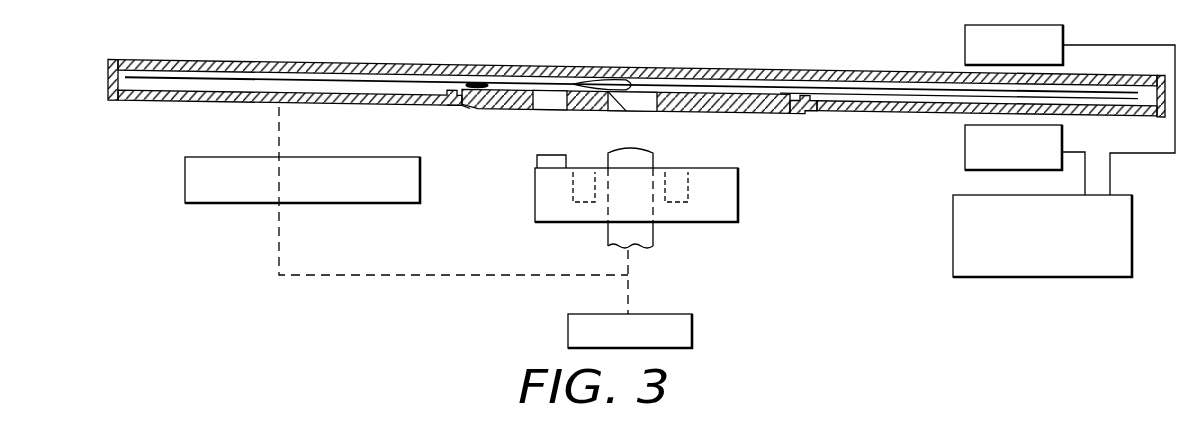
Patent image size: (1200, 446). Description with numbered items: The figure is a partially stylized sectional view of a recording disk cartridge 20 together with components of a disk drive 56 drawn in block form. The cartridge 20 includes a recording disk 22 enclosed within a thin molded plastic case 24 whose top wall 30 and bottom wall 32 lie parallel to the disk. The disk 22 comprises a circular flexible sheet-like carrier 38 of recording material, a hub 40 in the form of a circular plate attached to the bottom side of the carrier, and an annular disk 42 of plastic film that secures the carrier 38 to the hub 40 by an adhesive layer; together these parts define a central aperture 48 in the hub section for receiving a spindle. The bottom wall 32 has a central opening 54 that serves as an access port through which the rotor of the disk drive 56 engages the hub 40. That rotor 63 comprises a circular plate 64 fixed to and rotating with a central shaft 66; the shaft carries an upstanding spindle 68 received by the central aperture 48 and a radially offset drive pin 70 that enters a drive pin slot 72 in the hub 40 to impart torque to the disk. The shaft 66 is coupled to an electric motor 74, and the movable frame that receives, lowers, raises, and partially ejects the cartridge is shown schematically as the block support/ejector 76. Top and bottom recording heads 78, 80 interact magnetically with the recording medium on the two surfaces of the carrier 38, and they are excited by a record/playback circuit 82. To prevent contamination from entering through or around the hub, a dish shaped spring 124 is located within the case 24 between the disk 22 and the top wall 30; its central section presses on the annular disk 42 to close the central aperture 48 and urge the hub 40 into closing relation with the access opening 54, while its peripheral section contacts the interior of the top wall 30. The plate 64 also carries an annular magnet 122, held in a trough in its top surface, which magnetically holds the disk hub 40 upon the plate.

The cartridge 20 is at (468, 60).
The recording disk 22 is at (739, 121).
The case 24 is at (515, 62).
The top wall 30 is at (725, 71).
The bottom wall 32 is at (309, 108).
The carrier 38 is at (866, 91).
The hub 40 is at (690, 113).
The annular disk 42 is at (528, 84).
The central aperture 48 is at (630, 112).
The central opening 54 is at (503, 107).
The disk drive 56 is at (815, 270).
The rotor 63 is at (576, 229).
The circular plate 64 is at (738, 207).
The central shaft 66 is at (654, 237).
The spindle 68 is at (654, 163).
The drive pin 70 is at (537, 157).
The drive pin slot 72 is at (558, 108).
The electric motor 74 is at (693, 337).
The support/ejector 76 is at (420, 182).
The top recording head 78 is at (965, 44).
The bottom recording head 80 is at (965, 150).
The record/playback circuit 82 is at (1053, 277).
The annular magnet 122 is at (690, 188).
The dish shaped spring 124 is at (618, 80).